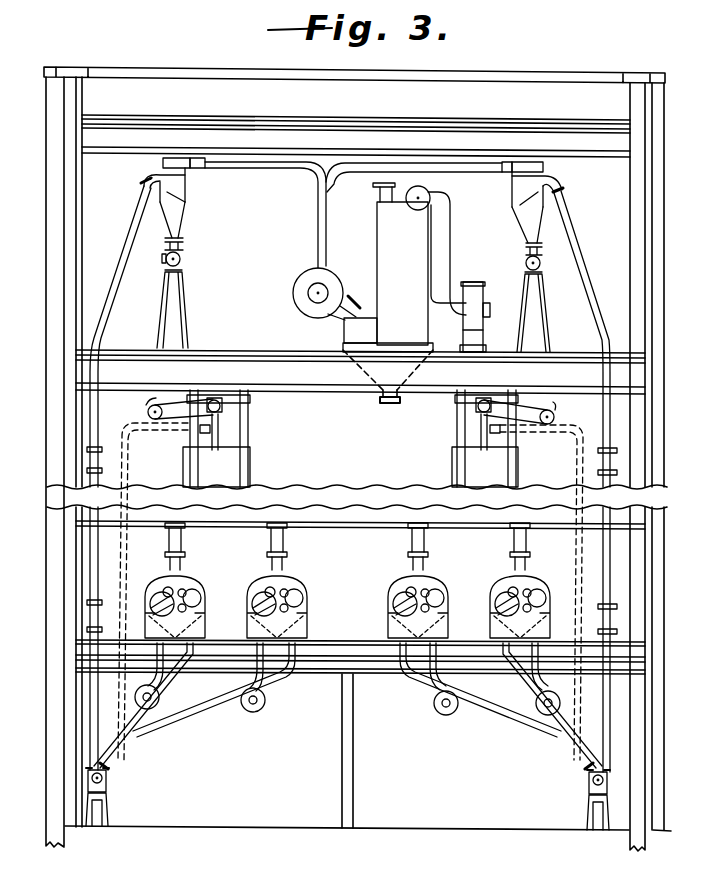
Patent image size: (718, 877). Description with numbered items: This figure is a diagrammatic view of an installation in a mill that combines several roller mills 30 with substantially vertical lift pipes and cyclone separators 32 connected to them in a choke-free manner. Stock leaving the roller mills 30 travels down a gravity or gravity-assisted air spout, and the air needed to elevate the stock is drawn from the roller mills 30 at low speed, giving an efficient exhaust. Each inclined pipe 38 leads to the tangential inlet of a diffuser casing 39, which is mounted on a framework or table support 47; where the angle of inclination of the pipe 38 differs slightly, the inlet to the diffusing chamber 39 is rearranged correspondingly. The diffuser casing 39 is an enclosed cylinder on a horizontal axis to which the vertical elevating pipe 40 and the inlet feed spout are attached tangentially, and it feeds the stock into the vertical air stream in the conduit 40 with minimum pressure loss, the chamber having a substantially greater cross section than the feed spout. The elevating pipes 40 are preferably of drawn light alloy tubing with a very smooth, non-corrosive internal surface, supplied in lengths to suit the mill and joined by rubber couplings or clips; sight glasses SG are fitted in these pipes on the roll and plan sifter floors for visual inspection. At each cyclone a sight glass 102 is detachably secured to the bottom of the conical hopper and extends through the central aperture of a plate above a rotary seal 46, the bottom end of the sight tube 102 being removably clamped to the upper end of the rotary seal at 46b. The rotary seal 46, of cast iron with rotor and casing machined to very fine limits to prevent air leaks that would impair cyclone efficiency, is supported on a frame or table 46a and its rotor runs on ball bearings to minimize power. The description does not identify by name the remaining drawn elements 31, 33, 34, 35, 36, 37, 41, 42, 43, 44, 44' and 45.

The roller mills 30 is at (206, 604).
The feeder 31 is at (250, 461).
The cyclone separator 32 is at (186, 202).
The inlet hood 33 is at (187, 564).
The beater rolls 34 is at (253, 587).
The hopper 35 is at (205, 630).
The discharge pipe 36 is at (172, 688).
The transfer pipe 37 is at (204, 712).
The pipe 38 is at (127, 747).
The diffuser casing 39 is at (107, 784).
The elevating pipe 40 is at (95, 724).
The cyclone 41 is at (168, 192).
The duct 42 is at (180, 158).
The duct 43 is at (297, 172).
The fan 44 is at (322, 300).
The fan 44' is at (485, 304).
The filter 45 is at (389, 255).
The rotary seal 46 is at (181, 258).
The table 46a is at (185, 315).
The clamp 46b is at (166, 257).
The table support 47 is at (108, 811).
The sight glass 102 is at (184, 241).
The sight glasses SG is at (95, 455).